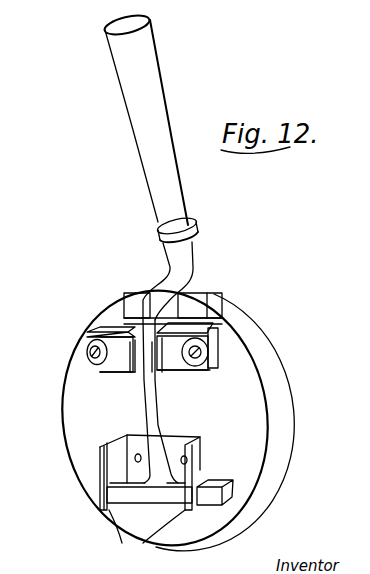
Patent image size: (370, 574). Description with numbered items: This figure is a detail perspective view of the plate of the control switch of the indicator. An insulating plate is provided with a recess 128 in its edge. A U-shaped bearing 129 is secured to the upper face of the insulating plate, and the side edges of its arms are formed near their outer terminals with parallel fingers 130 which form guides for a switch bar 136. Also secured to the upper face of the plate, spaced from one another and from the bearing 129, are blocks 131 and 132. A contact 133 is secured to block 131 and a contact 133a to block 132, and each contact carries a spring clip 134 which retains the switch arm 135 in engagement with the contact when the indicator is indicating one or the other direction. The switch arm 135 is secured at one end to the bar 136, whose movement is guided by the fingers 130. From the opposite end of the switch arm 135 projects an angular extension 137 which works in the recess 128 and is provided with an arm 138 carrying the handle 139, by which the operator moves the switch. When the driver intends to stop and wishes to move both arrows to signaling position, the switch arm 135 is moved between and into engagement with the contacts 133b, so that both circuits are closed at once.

The handle 139 is at (138, 118).
The arm 138 is at (198, 268).
The angular extension 137 is at (167, 295).
The switch arm 135 is at (147, 412).
The block 131 is at (117, 323).
The recess 128 is at (198, 292).
The contact 133 is at (86, 335).
The contact 133a is at (205, 372).
The contacts 133b is at (205, 308).
The block 132 is at (222, 340).
The spring clip 134 is at (110, 366).
The U-shaped bearing 129 is at (174, 441).
The switch bar 136 is at (233, 493).
The parallel fingers 130 is at (122, 545).